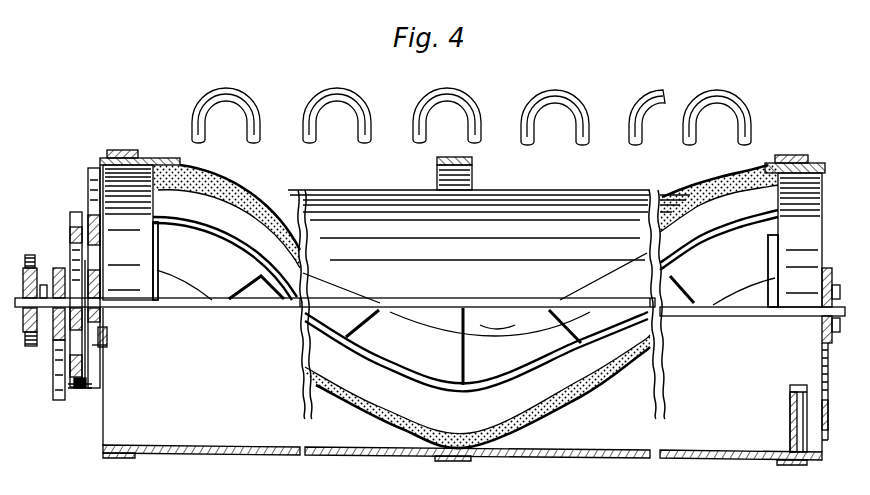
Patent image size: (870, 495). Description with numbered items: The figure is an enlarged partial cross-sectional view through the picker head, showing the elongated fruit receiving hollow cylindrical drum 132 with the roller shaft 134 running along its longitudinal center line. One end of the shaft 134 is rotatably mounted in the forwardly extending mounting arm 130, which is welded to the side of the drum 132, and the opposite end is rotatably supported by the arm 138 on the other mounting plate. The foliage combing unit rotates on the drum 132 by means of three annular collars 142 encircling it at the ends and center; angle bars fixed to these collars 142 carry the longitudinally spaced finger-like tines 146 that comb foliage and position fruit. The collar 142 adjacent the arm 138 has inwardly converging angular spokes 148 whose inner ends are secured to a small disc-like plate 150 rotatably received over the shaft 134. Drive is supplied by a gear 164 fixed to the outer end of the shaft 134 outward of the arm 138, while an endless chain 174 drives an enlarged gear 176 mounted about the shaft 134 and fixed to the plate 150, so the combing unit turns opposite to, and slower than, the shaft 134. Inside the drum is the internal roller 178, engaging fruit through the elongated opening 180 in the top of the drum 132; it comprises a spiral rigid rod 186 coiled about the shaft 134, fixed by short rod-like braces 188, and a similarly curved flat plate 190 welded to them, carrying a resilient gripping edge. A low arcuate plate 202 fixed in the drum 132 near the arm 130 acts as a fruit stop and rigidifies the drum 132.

The mounting arm 130 is at (822, 363).
The fruit receiving hollow cylindrical drum 132 is at (688, 458).
The roller shaft 134 is at (722, 318).
The arm 138 is at (58, 268).
The annular collars 142 is at (122, 152).
The finger-like tines 146 is at (331, 96).
The angular spokes 148 is at (85, 368).
The disc-like plate 150 is at (94, 324).
The gear 164 is at (42, 348).
The endless chain 174 is at (82, 384).
The enlarged gear 176 is at (98, 386).
The internal roller 178 is at (578, 420).
The elongated opening 180 is at (570, 190).
The spiral rigid rod 186 is at (378, 363).
The rod-like braces 188 is at (566, 316).
The curved flat plate 190 is at (497, 333).
The arcuate plate 202 is at (791, 425).